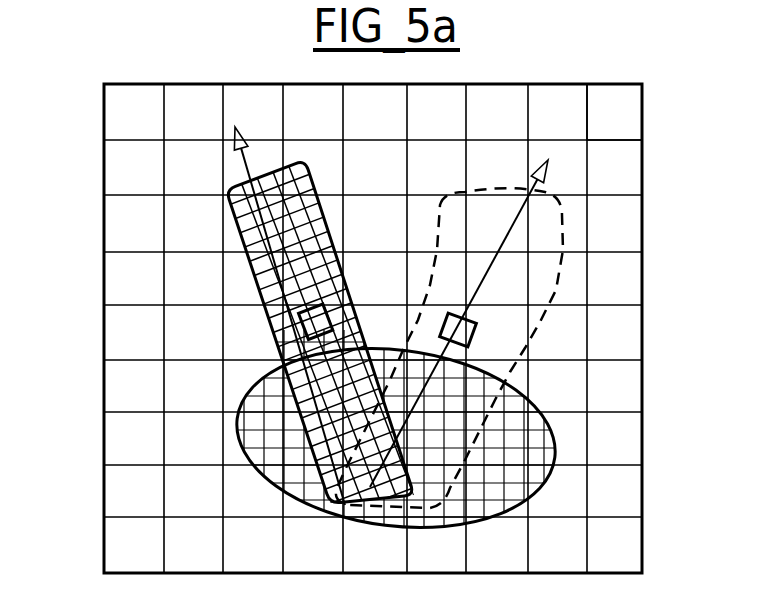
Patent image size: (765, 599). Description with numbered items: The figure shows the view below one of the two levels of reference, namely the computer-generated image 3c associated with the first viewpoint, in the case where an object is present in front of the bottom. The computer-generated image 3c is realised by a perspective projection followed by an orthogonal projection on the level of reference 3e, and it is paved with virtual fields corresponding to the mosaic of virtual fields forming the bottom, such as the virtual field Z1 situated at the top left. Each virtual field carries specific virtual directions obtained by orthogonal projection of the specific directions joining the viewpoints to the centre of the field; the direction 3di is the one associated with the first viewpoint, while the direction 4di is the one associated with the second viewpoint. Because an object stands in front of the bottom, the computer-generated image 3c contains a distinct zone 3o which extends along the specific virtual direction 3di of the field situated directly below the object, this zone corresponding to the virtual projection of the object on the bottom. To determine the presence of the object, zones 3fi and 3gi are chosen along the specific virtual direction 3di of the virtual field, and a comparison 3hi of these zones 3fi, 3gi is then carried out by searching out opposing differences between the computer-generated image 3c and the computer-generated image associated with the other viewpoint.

The virtual field Z1 is at (130, 122).
The level of reference 3e is at (622, 108).
The computer-generated image 3c is at (248, 455).
The specific virtual direction 4di is at (548, 178).
The zone 3gi is at (480, 330).
The comparison 3hi is at (436, 320).
The distinct zone 3o is at (283, 182).
The specific virtual direction 3di is at (240, 233).
The zone 3fi is at (327, 309).